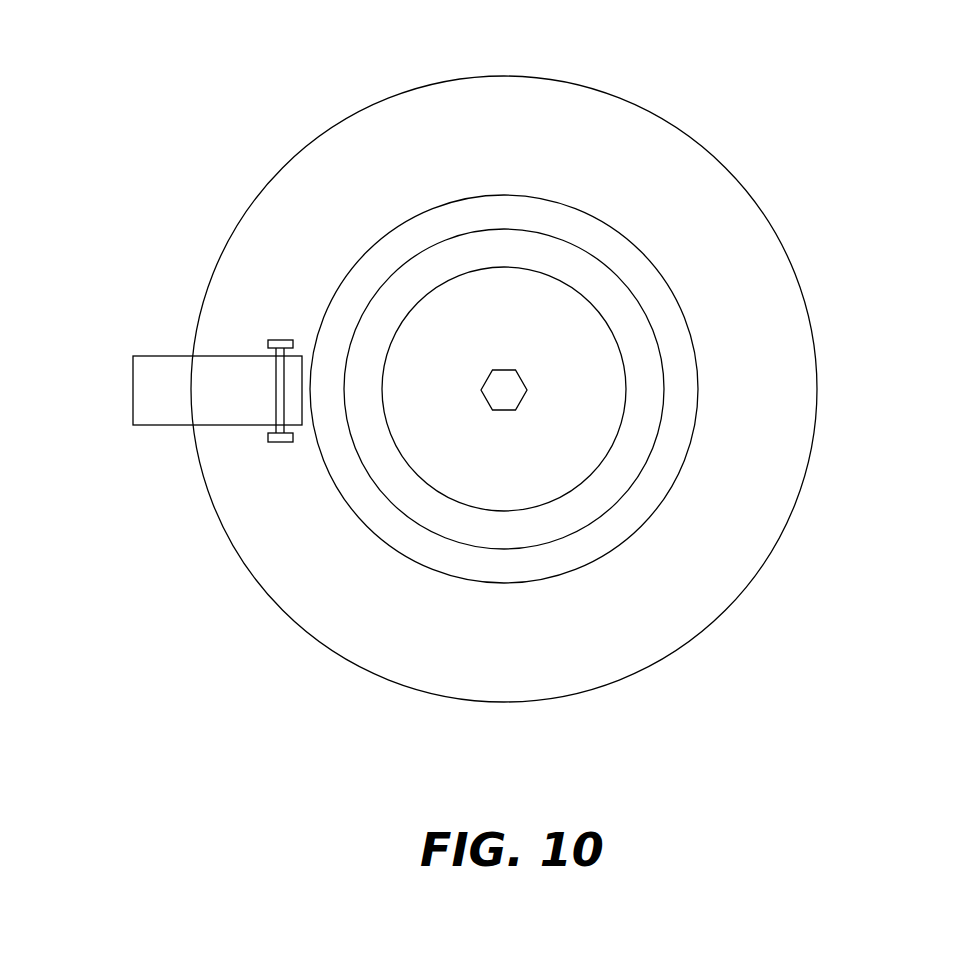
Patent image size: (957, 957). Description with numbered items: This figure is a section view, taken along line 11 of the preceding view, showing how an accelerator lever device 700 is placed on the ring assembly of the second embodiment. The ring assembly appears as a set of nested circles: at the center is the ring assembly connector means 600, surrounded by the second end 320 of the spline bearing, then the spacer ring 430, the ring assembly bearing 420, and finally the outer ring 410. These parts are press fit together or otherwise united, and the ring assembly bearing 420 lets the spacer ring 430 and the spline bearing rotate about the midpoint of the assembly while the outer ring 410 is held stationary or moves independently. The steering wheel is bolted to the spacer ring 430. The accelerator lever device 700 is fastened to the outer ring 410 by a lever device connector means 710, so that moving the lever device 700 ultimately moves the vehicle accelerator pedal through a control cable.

The section line 11- 11 is at (267, 395).
The outer ring 410 is at (755, 253).
The ring assembly bearing 420 is at (657, 298).
The spacer ring 430 is at (638, 332).
The second end of spline bearing 320 is at (600, 360).
The ring assembly connector means 600 is at (527, 390).
The accelerator lever device 700 is at (142, 390).
The lever device connector means 710 is at (268, 343).